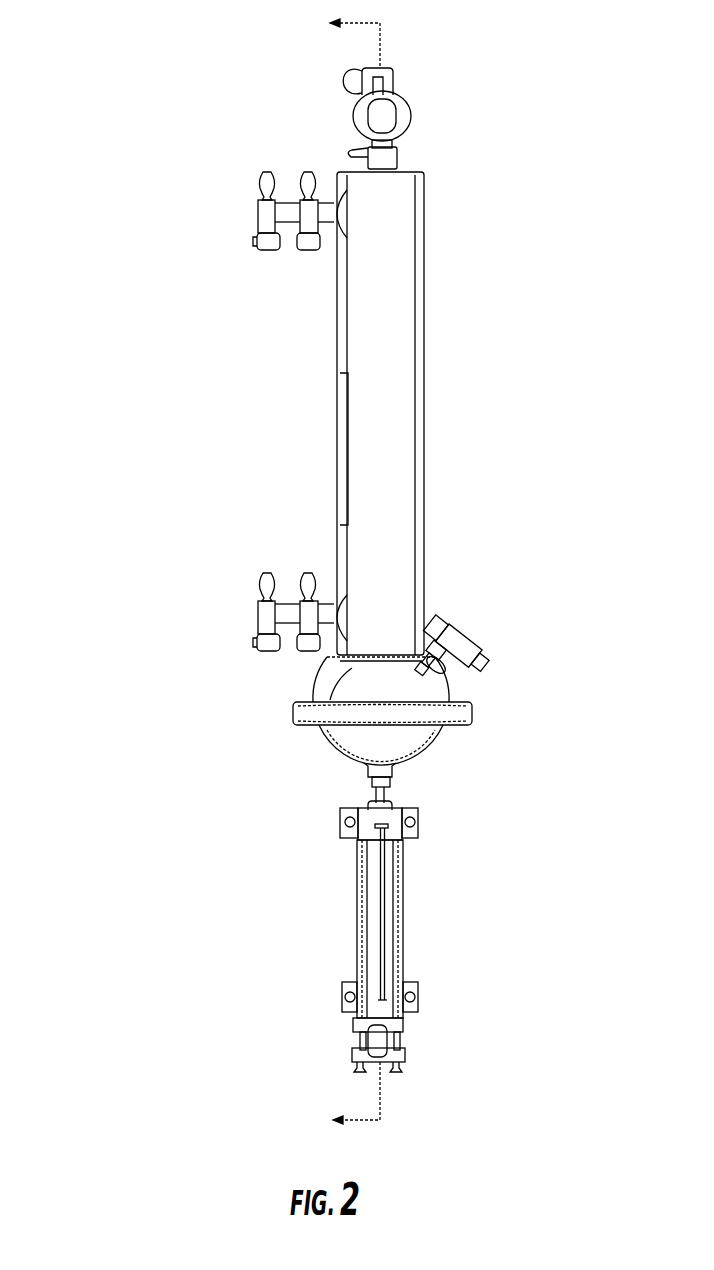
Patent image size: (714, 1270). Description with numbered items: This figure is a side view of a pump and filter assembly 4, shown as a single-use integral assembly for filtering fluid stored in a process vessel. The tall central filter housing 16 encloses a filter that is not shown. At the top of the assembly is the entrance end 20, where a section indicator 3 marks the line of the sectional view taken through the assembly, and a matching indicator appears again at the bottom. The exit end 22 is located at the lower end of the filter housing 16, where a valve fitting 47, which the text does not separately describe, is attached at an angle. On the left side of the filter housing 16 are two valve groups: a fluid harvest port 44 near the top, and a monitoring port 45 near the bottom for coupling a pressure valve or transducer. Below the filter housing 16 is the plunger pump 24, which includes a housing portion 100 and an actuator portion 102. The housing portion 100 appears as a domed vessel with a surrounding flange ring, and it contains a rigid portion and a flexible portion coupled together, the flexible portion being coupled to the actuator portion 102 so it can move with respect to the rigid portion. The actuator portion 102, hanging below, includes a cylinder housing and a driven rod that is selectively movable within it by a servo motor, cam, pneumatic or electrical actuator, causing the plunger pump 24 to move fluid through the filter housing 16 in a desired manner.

The section line 3- 3 is at (347, 570).
The pump and filter assembly 4 is at (115, 563).
The filter housing 16 is at (425, 425).
The entrance end 20 is at (430, 155).
The exit end 22 is at (426, 646).
The plunger pump 24 is at (492, 717).
The fluid harvest port 44 is at (266, 258).
The monitoring port 45 is at (262, 660).
The drain valve assembly 47 is at (485, 636).
The housing portion 100 is at (295, 727).
The actuator portion 102 is at (427, 920).